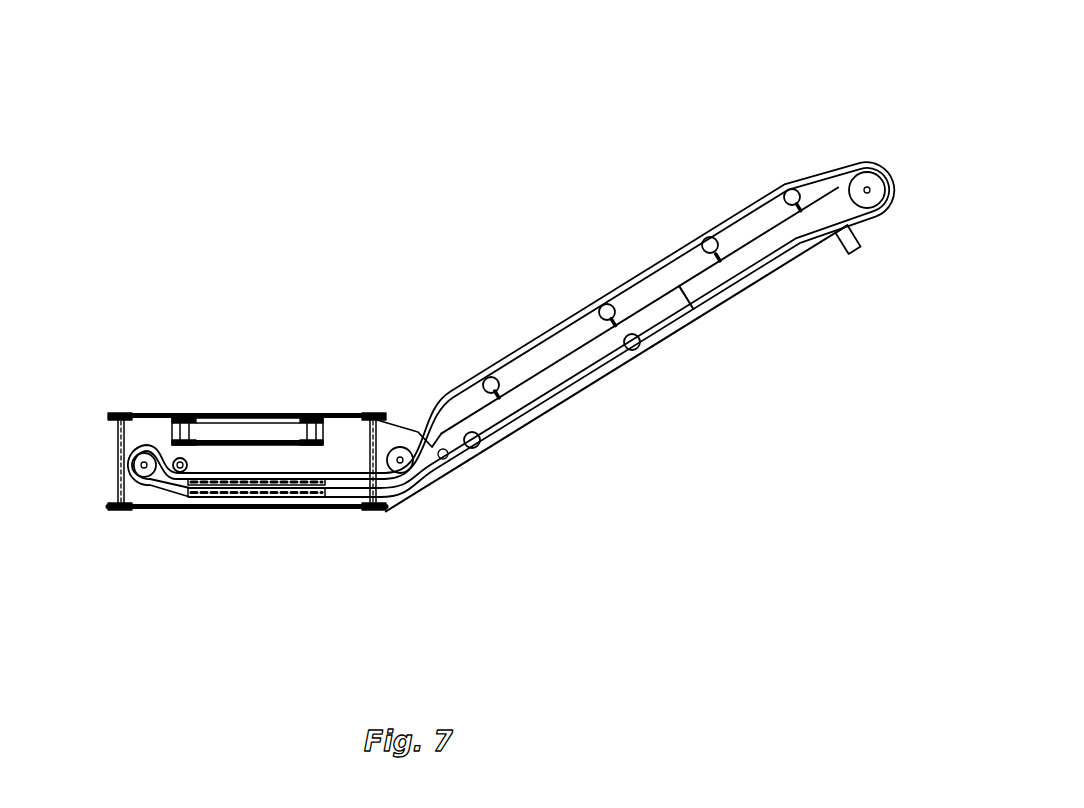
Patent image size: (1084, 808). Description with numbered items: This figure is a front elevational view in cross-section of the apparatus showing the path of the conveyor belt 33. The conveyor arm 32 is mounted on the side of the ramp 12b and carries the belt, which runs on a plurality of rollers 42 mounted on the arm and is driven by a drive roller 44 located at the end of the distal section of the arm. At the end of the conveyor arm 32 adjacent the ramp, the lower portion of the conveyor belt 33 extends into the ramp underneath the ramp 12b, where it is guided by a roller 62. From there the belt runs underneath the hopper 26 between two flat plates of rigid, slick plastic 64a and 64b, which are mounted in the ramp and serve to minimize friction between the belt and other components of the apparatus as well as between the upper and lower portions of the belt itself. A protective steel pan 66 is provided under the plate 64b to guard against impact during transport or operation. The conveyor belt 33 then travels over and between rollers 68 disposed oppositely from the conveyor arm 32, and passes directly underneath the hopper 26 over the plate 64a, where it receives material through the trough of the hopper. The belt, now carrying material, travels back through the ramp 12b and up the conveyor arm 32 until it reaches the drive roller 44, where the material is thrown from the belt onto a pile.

The ramp 12b is at (352, 416).
The hopper 26 is at (233, 420).
The conveyor arm 32 is at (753, 262).
The conveyor belt 33 is at (594, 388).
The rollers 42 is at (602, 305).
The drive roller 44 is at (864, 182).
The roller 62 is at (476, 448).
The plastic plate 64a is at (176, 482).
The plastic plate 64b is at (248, 497).
The protective steel pan 66 is at (328, 512).
The rollers 68 is at (116, 462).